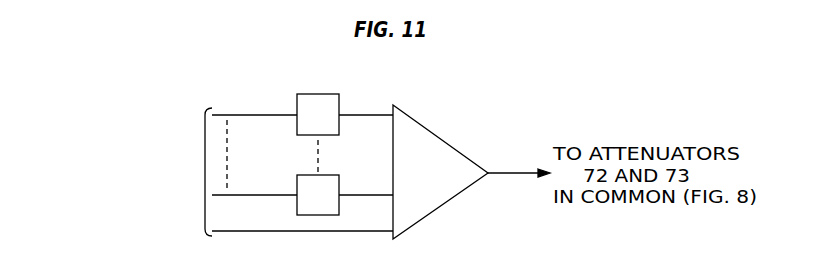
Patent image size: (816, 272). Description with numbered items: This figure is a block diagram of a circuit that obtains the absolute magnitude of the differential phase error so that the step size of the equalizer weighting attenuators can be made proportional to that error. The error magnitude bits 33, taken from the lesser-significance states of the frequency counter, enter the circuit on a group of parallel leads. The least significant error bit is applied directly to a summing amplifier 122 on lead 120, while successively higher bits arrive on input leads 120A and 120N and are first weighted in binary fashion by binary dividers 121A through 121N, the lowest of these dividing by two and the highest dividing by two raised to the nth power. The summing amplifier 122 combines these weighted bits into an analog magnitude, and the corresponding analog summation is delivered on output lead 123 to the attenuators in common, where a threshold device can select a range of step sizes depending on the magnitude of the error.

The error magnitude bits 33 is at (135, 172).
The lead 120 is at (264, 231).
The input lead 120N is at (240, 115).
The input lead 120A is at (246, 195).
The binary divider 121N is at (314, 94).
The binary divider 121A is at (324, 175).
The summing amplifier 122 is at (448, 200).
The output lead 123 is at (500, 173).